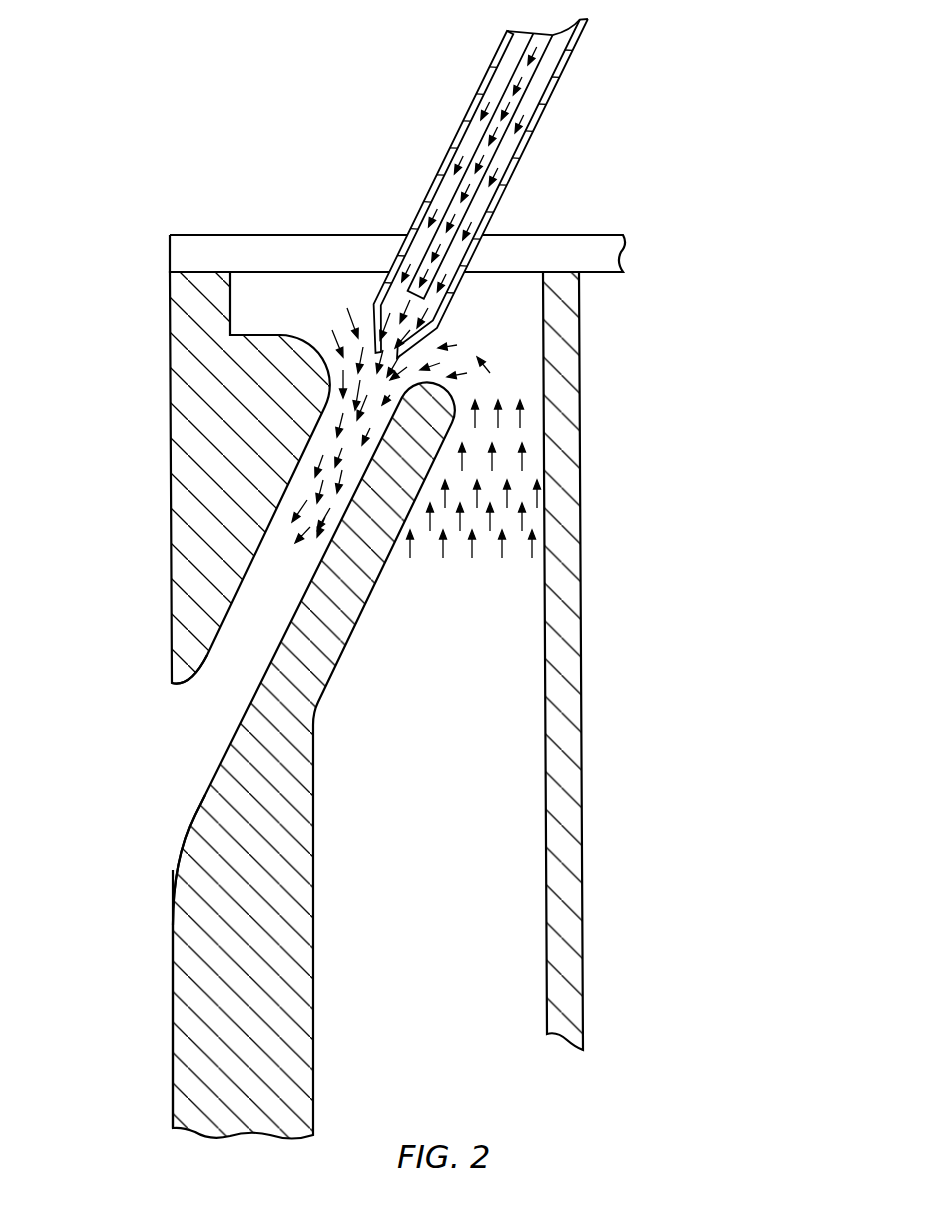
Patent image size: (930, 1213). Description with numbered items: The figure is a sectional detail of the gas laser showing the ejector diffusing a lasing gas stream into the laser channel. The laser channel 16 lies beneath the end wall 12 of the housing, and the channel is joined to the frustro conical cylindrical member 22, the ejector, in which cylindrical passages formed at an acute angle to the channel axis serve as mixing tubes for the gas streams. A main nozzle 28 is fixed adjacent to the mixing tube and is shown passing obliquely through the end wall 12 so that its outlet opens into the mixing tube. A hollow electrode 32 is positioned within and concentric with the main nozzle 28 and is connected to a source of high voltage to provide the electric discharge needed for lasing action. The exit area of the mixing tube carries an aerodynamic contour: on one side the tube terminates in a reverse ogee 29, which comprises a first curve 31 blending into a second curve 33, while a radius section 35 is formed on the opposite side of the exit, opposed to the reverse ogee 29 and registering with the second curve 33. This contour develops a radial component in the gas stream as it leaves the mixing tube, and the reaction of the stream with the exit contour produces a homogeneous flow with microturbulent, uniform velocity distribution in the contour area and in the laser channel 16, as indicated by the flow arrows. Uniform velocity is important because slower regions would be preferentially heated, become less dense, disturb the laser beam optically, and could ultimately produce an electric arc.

The end wall 12 is at (623, 238).
The laser channel 16 is at (126, 494).
The frustro conical cylindrical member 22 is at (170, 383).
The main nozzle 28 is at (529, 143).
The hollow electrode 32 is at (535, 75).
The first curve 31 is at (218, 763).
The radius section 35 is at (178, 684).
The reverse ogee 29 is at (197, 815).
The second curve 33 is at (178, 868).